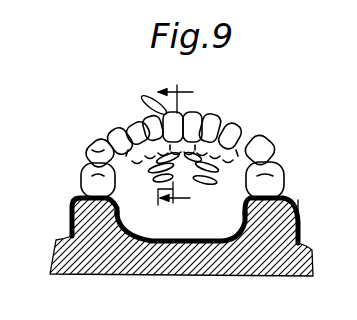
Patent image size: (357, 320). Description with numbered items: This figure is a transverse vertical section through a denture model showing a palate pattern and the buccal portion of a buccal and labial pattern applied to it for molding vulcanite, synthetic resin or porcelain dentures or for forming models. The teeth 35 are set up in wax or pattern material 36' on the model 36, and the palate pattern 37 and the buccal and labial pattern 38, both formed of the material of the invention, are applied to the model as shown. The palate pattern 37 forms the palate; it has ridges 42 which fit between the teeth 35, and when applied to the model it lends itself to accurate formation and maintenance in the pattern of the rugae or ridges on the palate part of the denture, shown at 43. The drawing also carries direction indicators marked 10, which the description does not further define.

The direction arrows 10 is at (189, 146).
The teeth 35 is at (82, 172).
The base block 36 is at (178, 247).
The block side wall 36' is at (179, 215).
The lining of central recess 37 is at (213, 242).
The tooth socket lining 38 is at (76, 191).
The tooth member 42 is at (141, 102).
The gauge bracket 43 is at (157, 203).